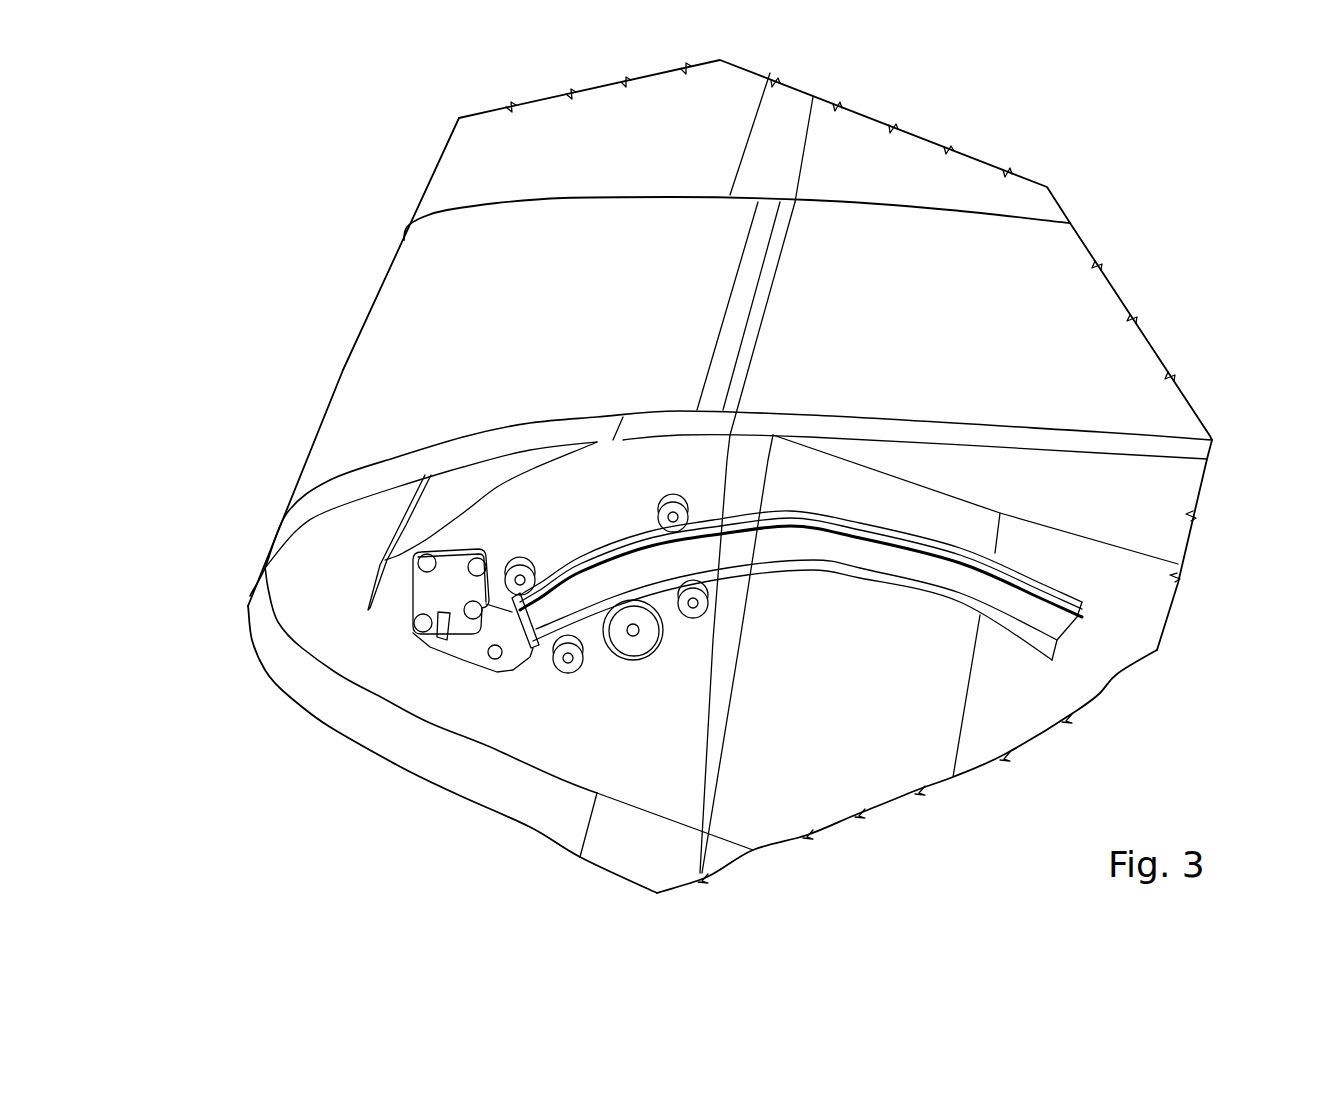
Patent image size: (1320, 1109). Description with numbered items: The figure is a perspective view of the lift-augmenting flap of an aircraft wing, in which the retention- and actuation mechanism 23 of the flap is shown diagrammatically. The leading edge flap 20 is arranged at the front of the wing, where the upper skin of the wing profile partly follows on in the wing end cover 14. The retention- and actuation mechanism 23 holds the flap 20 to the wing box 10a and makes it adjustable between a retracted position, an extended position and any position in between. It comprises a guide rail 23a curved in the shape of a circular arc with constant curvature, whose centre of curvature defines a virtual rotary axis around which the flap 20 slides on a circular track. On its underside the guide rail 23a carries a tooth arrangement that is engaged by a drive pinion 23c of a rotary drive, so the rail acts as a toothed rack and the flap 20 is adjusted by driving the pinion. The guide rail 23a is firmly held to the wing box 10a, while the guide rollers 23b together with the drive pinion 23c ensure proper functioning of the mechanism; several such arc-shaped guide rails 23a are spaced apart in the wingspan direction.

The leading edge flap 20 is at (392, 341).
The wing end cover 14 is at (453, 485).
The wing box 10a is at (865, 669).
The retention- and actuation mechanism 23 is at (1170, 764).
The guide rail 23a is at (997, 590).
The guide rollers 23b is at (557, 668).
The drive pinion 23c is at (647, 635).